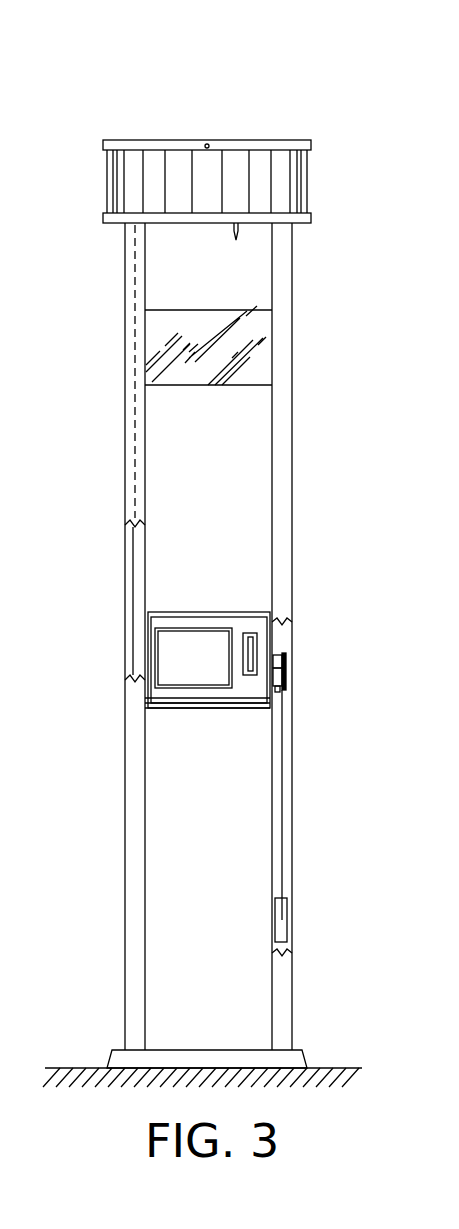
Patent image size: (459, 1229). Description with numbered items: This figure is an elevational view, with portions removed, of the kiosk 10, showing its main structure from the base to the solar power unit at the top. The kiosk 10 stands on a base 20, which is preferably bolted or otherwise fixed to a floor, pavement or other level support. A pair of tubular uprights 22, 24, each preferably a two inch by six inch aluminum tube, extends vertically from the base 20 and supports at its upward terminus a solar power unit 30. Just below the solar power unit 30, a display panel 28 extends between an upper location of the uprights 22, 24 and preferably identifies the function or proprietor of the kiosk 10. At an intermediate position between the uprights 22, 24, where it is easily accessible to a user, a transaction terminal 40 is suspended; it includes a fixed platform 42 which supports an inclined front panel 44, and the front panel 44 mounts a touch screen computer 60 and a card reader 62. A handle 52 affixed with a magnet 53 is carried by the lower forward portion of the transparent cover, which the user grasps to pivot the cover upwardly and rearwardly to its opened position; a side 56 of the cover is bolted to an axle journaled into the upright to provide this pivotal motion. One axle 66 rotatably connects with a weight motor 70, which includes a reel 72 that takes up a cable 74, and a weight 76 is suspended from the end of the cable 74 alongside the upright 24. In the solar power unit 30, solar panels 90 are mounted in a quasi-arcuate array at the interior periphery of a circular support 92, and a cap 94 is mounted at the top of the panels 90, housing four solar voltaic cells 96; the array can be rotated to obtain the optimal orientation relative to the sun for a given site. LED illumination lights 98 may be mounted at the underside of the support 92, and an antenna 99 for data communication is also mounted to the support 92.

The kiosk 10 is at (117, 92).
The base 20 is at (212, 1057).
The tubular upright 22 is at (135, 975).
The tubular upright 24 is at (283, 1003).
The display panel 28 is at (200, 370).
The solar power unit 30 is at (208, 173).
The transaction terminal 40 is at (262, 665).
The fixed platform 42 is at (200, 710).
The front panel 44 is at (245, 628).
The handle 52 is at (172, 700).
The magnet 53 is at (262, 703).
The side of the cover 56 is at (143, 692).
The touch screen computer 60 is at (192, 650).
The card reader 62 is at (254, 643).
The axle 66 is at (284, 670).
The weight motor 70 is at (288, 683).
The reel 72 is at (287, 676).
The cable 74 is at (283, 820).
The weight 76 is at (283, 918).
The solar panels 90 is at (157, 186).
The circular support 92 is at (302, 218).
The cap 94 is at (297, 145).
The solar voltaic cells 96 is at (207, 144).
The LED illumination lights 98 is at (198, 228).
The antenna 99 is at (237, 238).